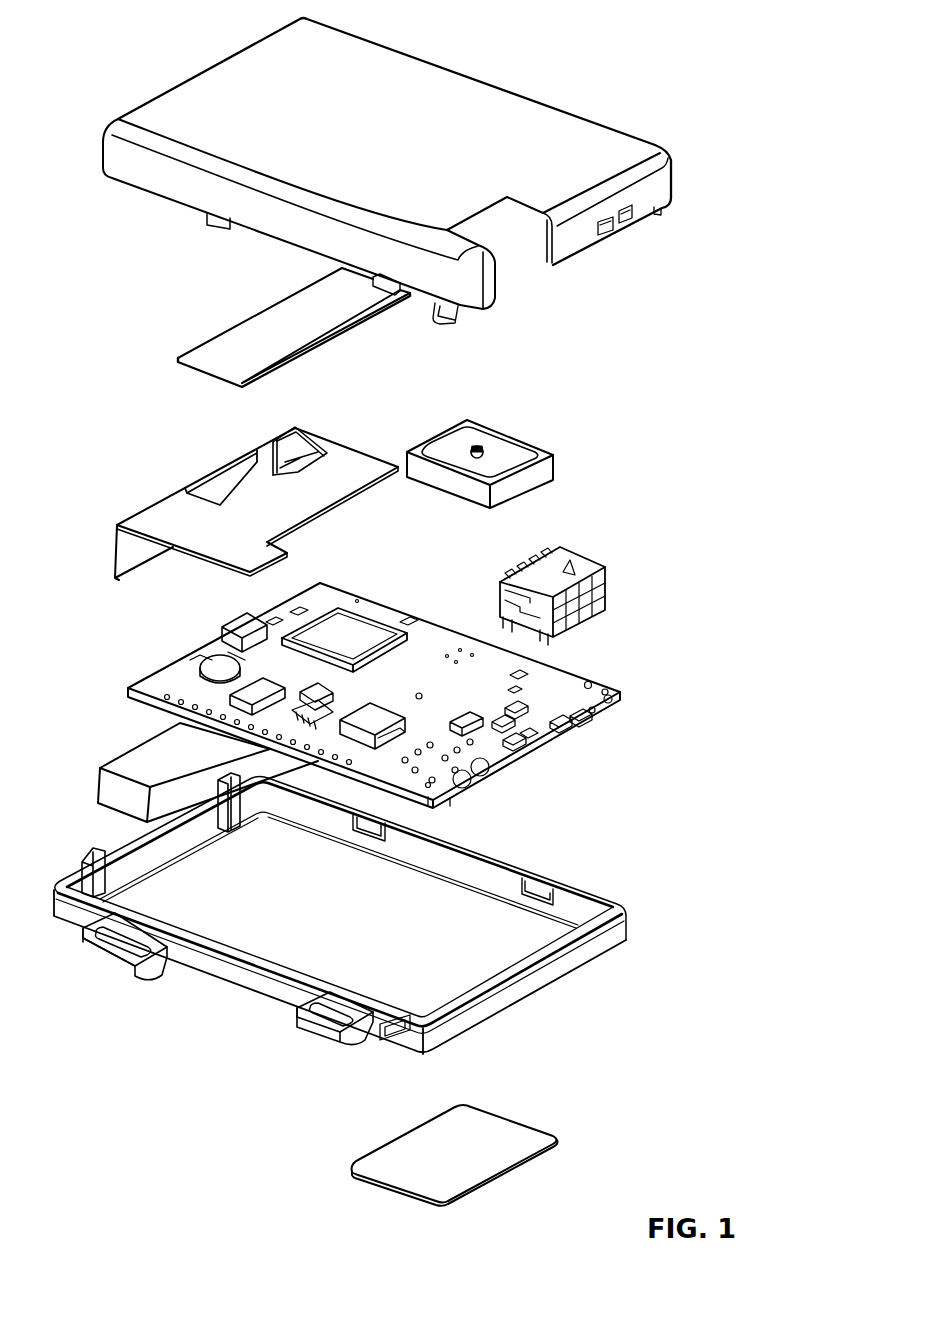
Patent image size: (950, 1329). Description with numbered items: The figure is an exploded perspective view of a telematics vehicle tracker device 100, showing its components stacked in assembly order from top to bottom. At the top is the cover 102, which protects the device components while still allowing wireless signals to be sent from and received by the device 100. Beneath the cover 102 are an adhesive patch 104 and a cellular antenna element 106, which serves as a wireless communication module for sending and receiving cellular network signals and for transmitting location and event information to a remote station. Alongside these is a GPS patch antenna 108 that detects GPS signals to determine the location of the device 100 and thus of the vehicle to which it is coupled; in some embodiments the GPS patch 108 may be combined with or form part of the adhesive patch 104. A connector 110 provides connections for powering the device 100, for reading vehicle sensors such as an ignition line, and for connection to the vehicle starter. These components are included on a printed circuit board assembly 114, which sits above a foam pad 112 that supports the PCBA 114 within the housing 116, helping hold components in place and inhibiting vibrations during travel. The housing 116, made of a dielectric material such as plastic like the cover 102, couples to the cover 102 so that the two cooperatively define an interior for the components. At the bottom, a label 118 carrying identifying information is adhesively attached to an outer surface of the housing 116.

The vehicle tracker device 100 is at (120, 57).
The cover 102 is at (688, 152).
The adhesive patch 104 is at (176, 352).
The cellular antenna element 106 is at (266, 438).
The GPS patch antenna 108 is at (572, 445).
The connector 110 is at (622, 560).
The foam pad 112 is at (123, 745).
The printed circuit board assembly 114 is at (640, 693).
The housing 116 is at (645, 908).
The label 118 is at (575, 1129).